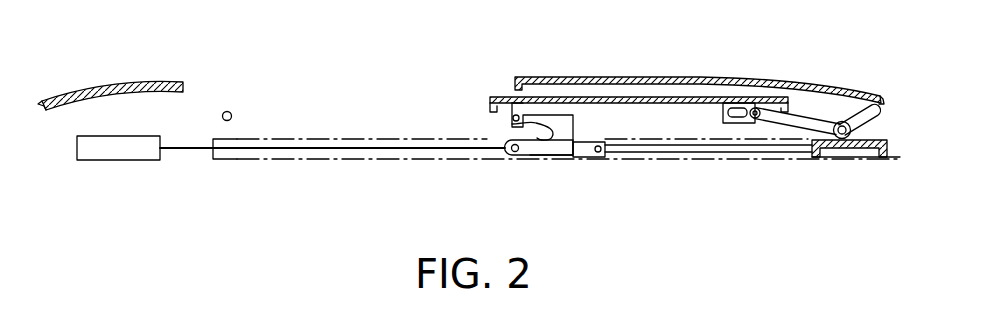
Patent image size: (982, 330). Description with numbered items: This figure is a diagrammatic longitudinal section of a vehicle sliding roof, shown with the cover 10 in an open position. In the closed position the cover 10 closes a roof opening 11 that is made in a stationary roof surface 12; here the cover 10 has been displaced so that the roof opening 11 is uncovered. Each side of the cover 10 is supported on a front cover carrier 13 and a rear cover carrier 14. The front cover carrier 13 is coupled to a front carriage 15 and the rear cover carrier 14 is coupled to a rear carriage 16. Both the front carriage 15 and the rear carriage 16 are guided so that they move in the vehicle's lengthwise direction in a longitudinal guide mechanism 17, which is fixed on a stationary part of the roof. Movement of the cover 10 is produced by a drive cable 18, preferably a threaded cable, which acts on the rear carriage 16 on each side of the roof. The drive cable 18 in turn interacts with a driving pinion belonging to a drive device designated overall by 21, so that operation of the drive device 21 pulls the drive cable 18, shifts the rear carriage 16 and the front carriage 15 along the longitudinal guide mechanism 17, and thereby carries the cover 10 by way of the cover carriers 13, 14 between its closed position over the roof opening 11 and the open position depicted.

The cover 10 is at (627, 98).
The roof opening 11 is at (324, 100).
The stationary roof surface 12 is at (147, 82).
The front cover carrier 13 is at (548, 120).
The rear cover carrier 14 is at (787, 123).
The front carriage 15 is at (585, 152).
The rear carriage 16 is at (855, 158).
The longitudinal guide mechanism 17 is at (375, 160).
The drive cable 18 is at (447, 150).
The drive device 21 is at (120, 152).